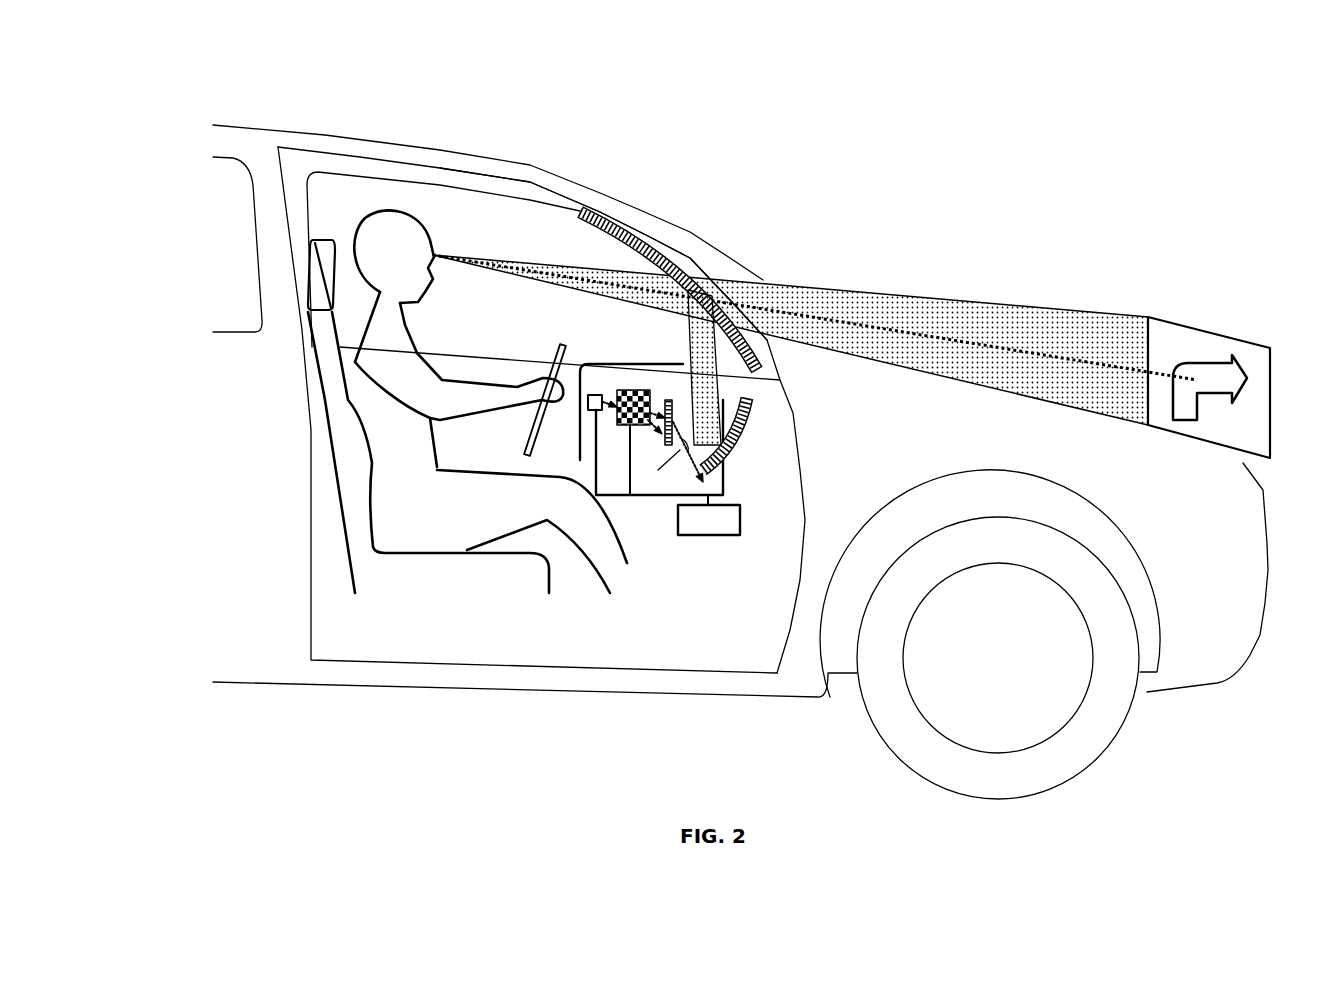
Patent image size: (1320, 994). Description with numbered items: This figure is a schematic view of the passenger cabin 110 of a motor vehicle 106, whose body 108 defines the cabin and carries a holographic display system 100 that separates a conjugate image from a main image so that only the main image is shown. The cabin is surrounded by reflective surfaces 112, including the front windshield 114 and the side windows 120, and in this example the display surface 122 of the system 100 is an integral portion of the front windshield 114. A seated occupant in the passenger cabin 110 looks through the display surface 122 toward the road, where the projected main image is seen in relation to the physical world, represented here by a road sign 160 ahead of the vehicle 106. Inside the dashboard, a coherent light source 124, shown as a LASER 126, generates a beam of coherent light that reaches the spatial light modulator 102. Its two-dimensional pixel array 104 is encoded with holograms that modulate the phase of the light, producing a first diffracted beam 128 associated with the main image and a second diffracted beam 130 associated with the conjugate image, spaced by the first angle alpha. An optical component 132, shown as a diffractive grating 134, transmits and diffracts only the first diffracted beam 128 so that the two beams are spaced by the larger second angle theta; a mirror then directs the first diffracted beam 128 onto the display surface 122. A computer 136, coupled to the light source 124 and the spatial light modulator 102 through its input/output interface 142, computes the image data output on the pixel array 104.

The holographic display system 100 is at (731, 557).
The spatial light modulator 102 is at (592, 568).
The two-dimensional pixel array 104 is at (617, 427).
The motor vehicle 106 is at (166, 125).
The body 108 is at (325, 124).
The passenger cabin 110 is at (488, 232).
The reflective surfaces 112 is at (489, 251).
The front windshield 114 is at (648, 240).
The side windows 120 is at (497, 190).
The display surface 122 is at (620, 252).
The coherent light source 124 is at (537, 364).
The LASER 126 is at (587, 395).
The first diffracted beam 128 is at (690, 400).
The second diffracted beam 130 is at (667, 447).
The optical component 132 is at (637, 398).
The diffractive grating 134 is at (668, 400).
The computer 136 is at (712, 536).
The input/output interface 142 is at (748, 400).
The traffic sign 160 is at (1190, 312).